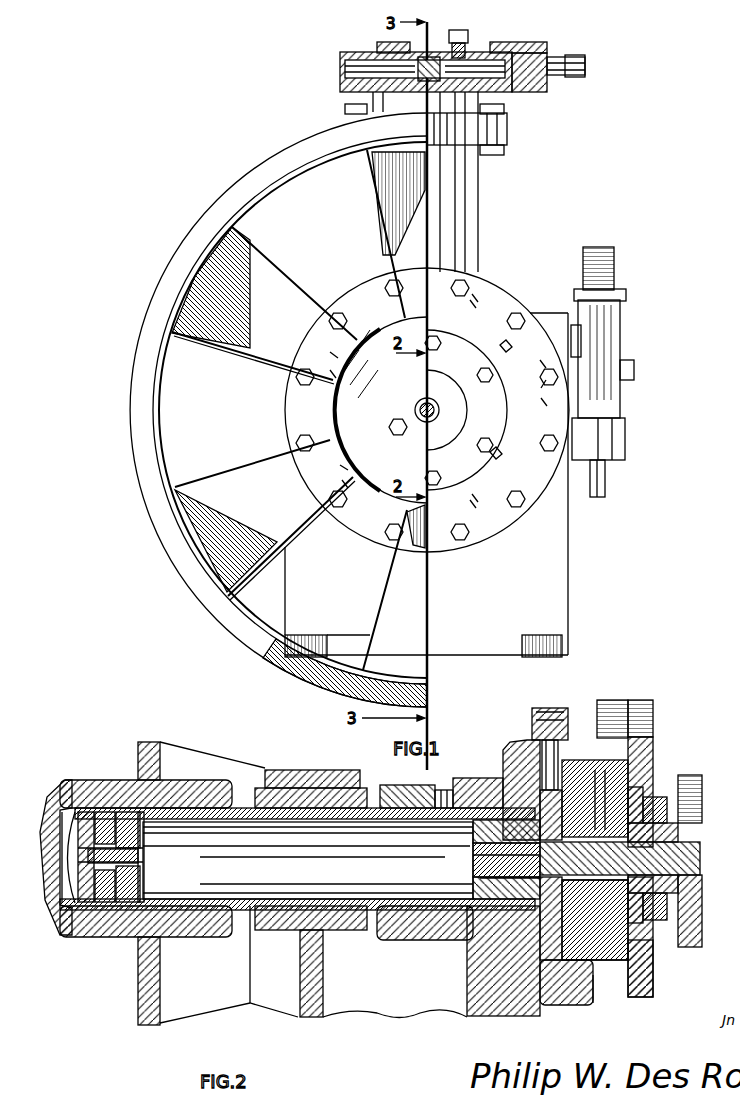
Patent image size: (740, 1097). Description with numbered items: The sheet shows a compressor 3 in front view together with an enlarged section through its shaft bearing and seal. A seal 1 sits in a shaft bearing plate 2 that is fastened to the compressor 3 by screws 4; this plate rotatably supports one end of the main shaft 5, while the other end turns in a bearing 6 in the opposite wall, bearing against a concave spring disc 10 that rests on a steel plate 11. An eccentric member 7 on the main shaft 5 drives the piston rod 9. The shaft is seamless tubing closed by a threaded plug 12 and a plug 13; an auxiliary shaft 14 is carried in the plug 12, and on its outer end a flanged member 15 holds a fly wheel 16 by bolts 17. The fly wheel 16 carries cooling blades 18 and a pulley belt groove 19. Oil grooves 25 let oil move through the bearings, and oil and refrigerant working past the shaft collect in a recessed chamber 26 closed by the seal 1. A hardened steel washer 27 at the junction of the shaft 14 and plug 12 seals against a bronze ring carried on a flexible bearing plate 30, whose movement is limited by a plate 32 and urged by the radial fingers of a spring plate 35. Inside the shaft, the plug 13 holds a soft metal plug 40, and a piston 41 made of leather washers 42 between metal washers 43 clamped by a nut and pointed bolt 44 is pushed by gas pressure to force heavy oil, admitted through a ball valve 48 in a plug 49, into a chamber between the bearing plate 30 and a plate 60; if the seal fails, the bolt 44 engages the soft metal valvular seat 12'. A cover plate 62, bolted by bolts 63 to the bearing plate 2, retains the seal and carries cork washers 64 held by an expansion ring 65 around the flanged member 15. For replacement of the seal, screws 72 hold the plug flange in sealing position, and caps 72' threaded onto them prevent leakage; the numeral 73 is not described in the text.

In FIG. 2, the seal 1 is at (600, 980).
In FIG. 1, the shaft bearing plate 2 is at (542, 467).
In FIG. 2, the shaft bearing plate 2 is at (526, 968).
In FIG. 1, the compressor 3 is at (462, 225).
In FIG. 2, the compressor 3 is at (193, 1003).
In FIG. 1, the screws 4 is at (469, 289).
In FIG. 2, the main shaft 5 is at (233, 887).
In FIG. 2, the bearing 6 is at (190, 930).
In FIG. 2, the eccentric member 7 is at (284, 993).
In FIG. 2, the piston rod 9 is at (298, 771).
In FIG. 2, the concave spring disc 10 is at (66, 906).
In FIG. 2, the steel plate 11 is at (48, 915).
In FIG. 2, the threaded plug 12 is at (488, 895).
In FIG. 2, the soft metal valvular seat 12' is at (455, 867).
In FIG. 2, the plug 13 is at (92, 812).
In FIG. 1, the auxiliary shaft 14 is at (421, 422).
In FIG. 2, the auxiliary shaft 14 is at (690, 857).
In FIG. 2, the flanged member 15 is at (684, 895).
In FIG. 1, the fly wheel 16 is at (378, 404).
In FIG. 1, the bolts 17 is at (397, 433).
In FIG. 1, the blades 18 is at (221, 490).
In FIG. 1, the pulley belt groove 19 is at (165, 527).
In FIG. 2, the oil grooves 25 is at (205, 808).
In FIG. 2, the recessed chamber 26 is at (585, 955).
In FIG. 2, the hardened and ground steel washer 27 is at (560, 955).
In FIG. 2, the bearing plate 30 is at (580, 757).
In FIG. 2, the plate 32 is at (572, 745).
In FIG. 2, the spring plate 35 is at (604, 745).
In FIG. 2, the soft metal plug 40 is at (100, 905).
In FIG. 2, the piston 41 is at (140, 883).
In FIG. 2, the leather washers 42 is at (130, 902).
In FIG. 2, the metal washers 43 is at (120, 812).
In FIG. 2, the nut and pointed bolt 44 is at (150, 855).
In FIG. 2, the ball valve 48 is at (473, 863).
In FIG. 2, the plug 49 is at (480, 880).
In FIG. 2, the plate 60 is at (634, 953).
In FIG. 1, the cover plate 62 is at (450, 470).
In FIG. 2, the cover plate 62 is at (640, 775).
In FIG. 1, the bolts 63 is at (494, 375).
In FIG. 2, the cork washers 64 is at (668, 806).
In FIG. 2, the expansion ring 65 is at (640, 932).
In FIG. 2, the screws 72 is at (553, 741).
In FIG. 2, the caps 72' is at (530, 713).
In FIG. 1, the valve 73 is at (483, 340).